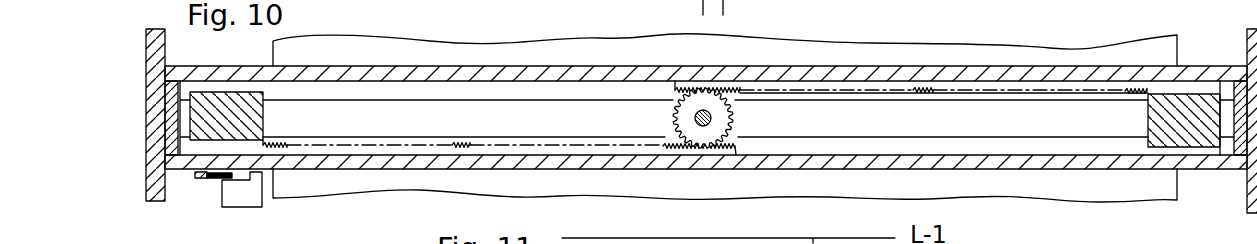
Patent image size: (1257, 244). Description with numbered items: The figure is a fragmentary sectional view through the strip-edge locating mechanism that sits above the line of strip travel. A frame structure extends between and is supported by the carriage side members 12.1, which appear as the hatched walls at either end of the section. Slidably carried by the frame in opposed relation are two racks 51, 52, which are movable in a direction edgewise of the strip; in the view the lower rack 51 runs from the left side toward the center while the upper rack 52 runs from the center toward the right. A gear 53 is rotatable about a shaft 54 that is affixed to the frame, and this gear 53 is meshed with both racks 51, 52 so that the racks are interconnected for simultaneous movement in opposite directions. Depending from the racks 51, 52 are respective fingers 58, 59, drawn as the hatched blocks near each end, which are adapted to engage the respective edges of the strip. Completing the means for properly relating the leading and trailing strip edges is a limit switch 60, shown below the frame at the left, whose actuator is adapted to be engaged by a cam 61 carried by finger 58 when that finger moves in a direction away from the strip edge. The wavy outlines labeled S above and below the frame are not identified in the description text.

The carriage side member 12.1 is at (152, 190).
The support bracket / sheet S is at (397, 188).
The rack 51 is at (693, 150).
The rack 52 is at (776, 97).
The gear 53 is at (720, 117).
The shaft 54 is at (676, 116).
The finger 58 is at (248, 115).
The finger 59 is at (1180, 133).
The limit switch 60 is at (245, 197).
The cam 61 is at (197, 178).